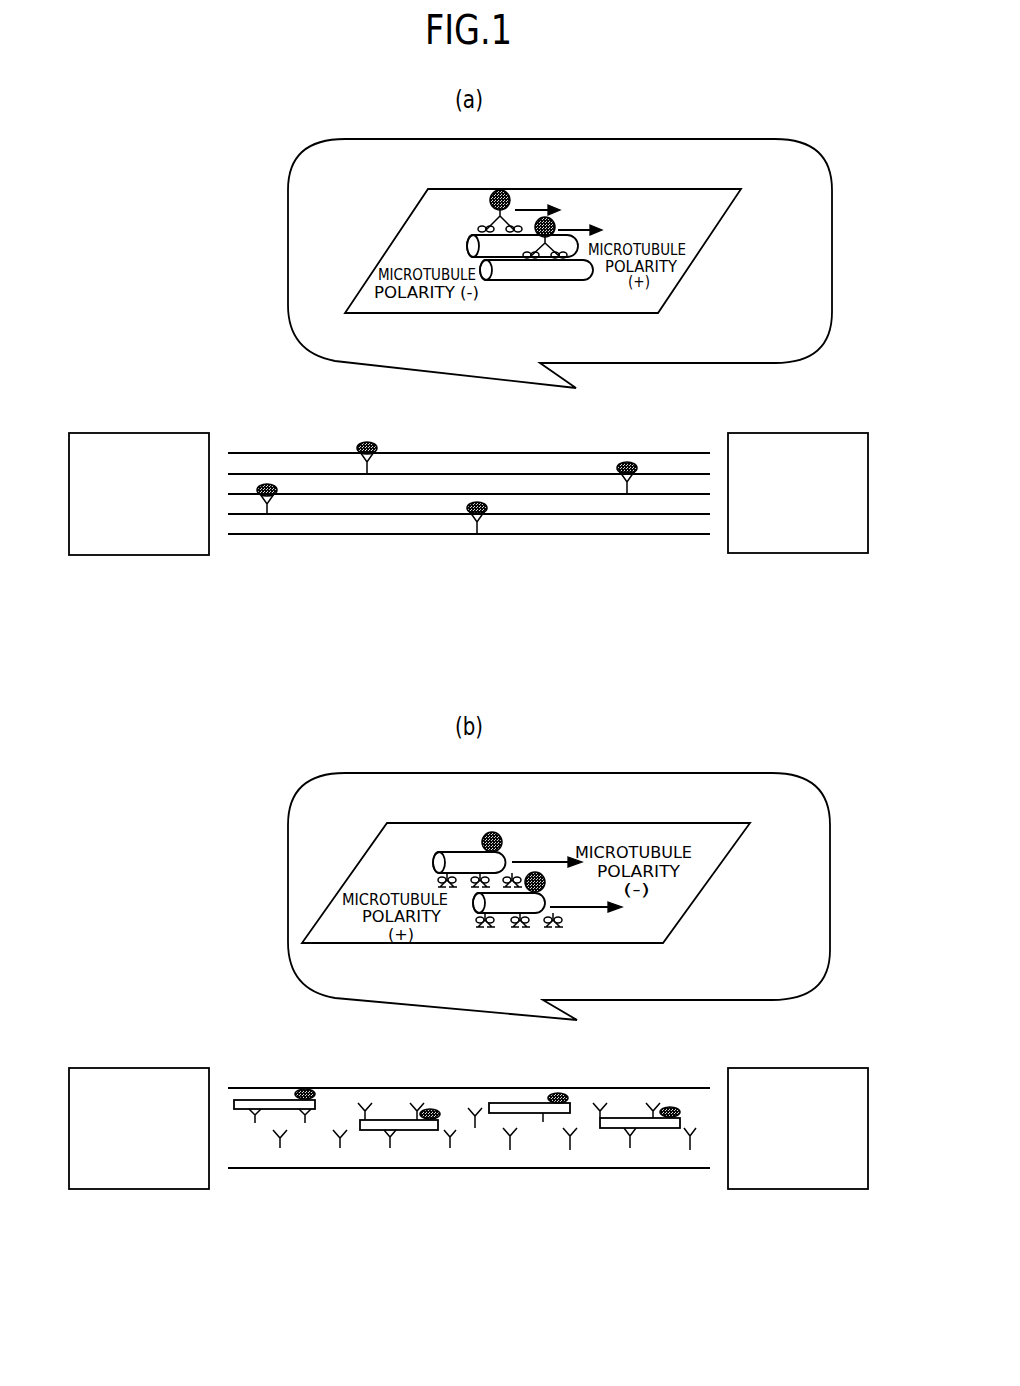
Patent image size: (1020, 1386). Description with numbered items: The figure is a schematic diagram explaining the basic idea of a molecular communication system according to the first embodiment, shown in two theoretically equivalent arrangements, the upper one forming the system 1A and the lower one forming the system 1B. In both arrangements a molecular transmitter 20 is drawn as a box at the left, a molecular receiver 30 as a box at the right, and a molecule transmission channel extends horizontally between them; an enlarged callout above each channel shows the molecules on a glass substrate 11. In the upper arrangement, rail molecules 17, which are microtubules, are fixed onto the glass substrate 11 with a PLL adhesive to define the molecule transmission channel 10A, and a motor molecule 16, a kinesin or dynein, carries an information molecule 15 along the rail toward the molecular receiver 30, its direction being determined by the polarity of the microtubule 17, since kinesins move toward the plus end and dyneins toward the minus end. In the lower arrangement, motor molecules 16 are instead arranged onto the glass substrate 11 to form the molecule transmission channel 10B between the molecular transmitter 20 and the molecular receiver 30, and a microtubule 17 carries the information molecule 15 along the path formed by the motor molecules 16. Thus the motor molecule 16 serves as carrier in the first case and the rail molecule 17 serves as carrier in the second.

The molecular communication system 1A is at (238, 402).
The molecular communication system 1B is at (238, 1040).
The molecule transmission channel 10A is at (300, 456).
The molecule transmission channel 10B is at (388, 1097).
The glass substrate 11 is at (714, 230).
The information molecule 15 is at (556, 220).
The motor molecule 16 is at (487, 224).
The rail molecule 17 is at (552, 277).
The molecular transmitter 20 is at (95, 433).
The molecular receiver 30 is at (752, 433).